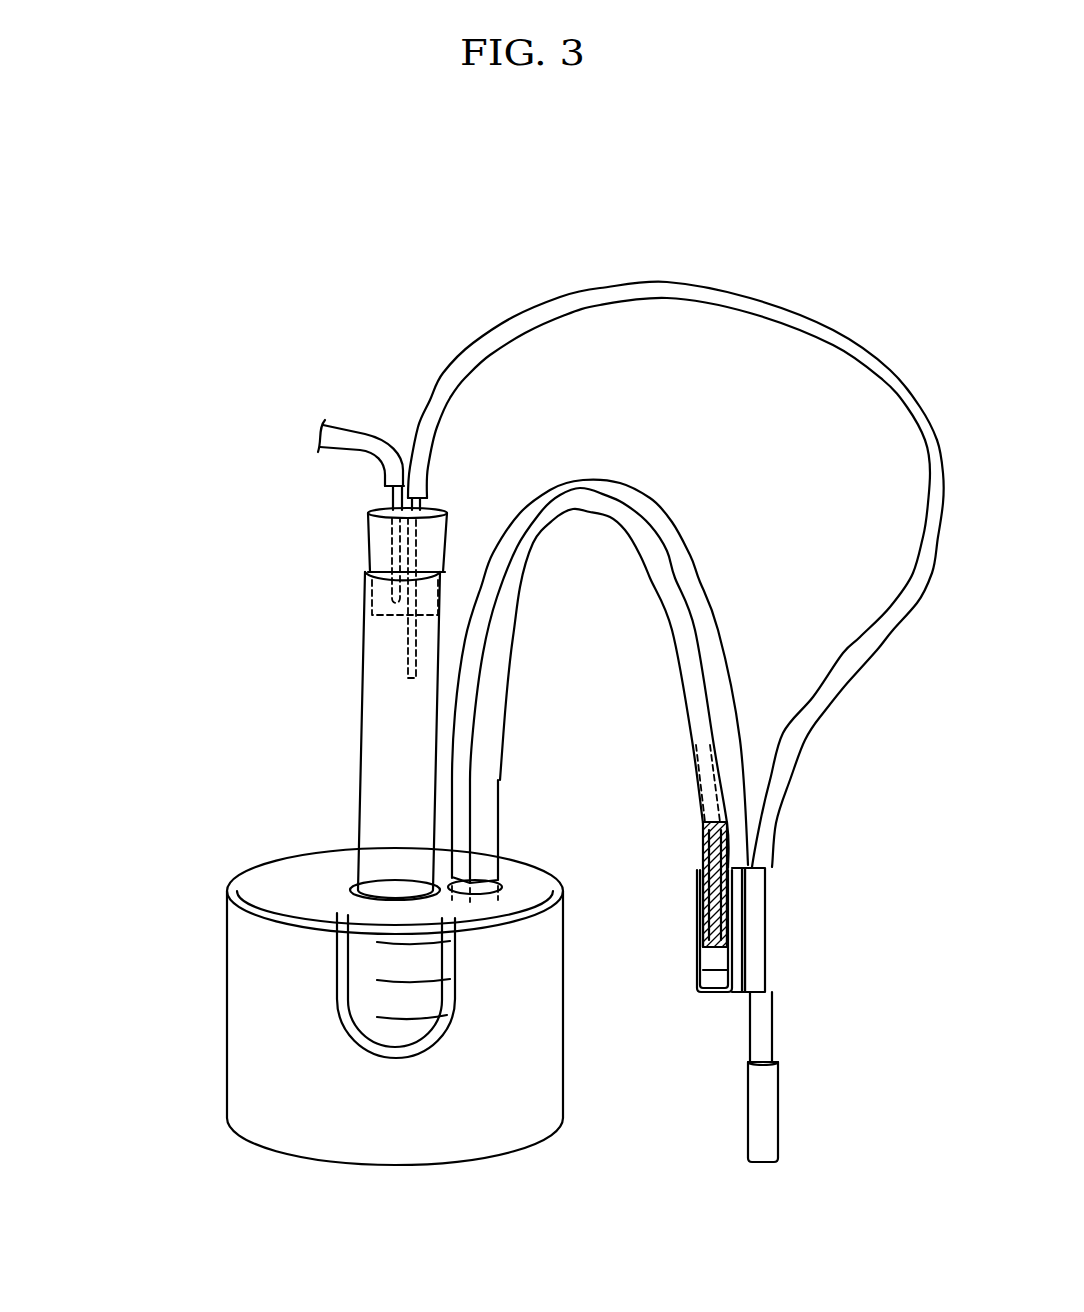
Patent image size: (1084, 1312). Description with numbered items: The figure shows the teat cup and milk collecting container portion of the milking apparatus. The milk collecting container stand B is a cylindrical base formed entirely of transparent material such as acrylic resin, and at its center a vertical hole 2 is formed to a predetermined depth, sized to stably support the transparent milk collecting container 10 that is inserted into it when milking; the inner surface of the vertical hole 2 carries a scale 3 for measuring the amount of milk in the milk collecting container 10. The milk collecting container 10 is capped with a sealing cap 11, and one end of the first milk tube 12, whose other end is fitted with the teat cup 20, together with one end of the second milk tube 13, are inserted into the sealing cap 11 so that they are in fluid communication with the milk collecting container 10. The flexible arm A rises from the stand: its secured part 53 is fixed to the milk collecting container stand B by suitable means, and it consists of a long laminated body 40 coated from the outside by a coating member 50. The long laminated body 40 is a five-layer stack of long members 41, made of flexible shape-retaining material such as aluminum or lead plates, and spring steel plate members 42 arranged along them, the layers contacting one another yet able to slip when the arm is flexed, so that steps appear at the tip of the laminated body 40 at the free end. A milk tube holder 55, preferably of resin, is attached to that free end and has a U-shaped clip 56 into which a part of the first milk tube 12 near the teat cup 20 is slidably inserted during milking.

The vertical hole 2 is at (337, 1013).
The scale 3 is at (412, 1020).
The milk collecting container 10 is at (367, 755).
The sealing cap 11 is at (377, 548).
The first milk tube 12 is at (857, 350).
The second milk tube 13 is at (344, 433).
The teat cup 20 is at (768, 1140).
The long laminated body 40 is at (695, 828).
The long member 41 is at (717, 932).
The steel plate member 42 is at (703, 897).
The coating member 50 is at (612, 487).
The secured part of flexible arm 53 is at (490, 850).
The milk tube holder 55 is at (697, 962).
The U-shaped clip 56 is at (757, 960).
The flexible arm A is at (689, 506).
The milk collecting container stand B is at (193, 1057).